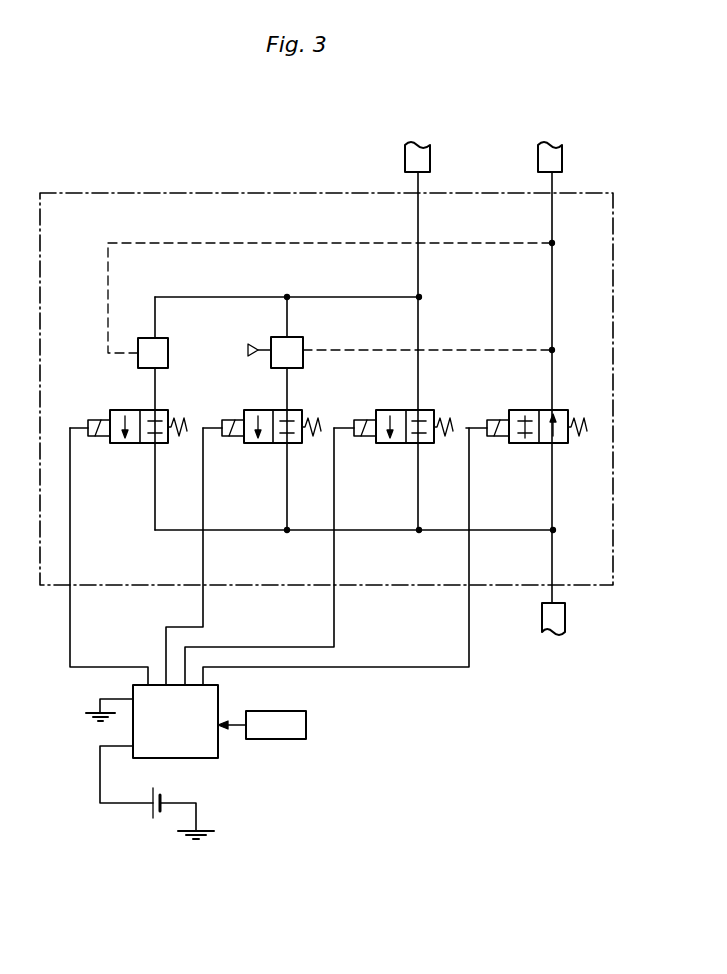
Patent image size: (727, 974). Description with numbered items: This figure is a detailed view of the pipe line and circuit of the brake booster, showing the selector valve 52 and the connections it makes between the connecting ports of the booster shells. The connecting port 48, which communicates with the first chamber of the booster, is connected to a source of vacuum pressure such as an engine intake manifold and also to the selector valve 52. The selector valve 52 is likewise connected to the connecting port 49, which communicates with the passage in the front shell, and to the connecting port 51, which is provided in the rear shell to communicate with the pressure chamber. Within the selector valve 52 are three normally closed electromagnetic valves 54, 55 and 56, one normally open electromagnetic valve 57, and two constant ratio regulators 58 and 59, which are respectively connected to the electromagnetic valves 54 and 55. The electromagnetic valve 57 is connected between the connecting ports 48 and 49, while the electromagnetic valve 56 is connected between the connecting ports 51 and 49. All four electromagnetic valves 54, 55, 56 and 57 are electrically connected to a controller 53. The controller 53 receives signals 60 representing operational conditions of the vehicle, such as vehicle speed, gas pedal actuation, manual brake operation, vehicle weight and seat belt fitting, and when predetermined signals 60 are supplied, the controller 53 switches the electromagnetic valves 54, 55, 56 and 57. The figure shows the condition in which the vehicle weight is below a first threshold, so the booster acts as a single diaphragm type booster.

The connecting port 48 is at (562, 155).
The connecting port 49 is at (565, 620).
The connecting port 51 is at (430, 155).
The selector valve 52 is at (613, 302).
The controller 53 is at (200, 758).
The normally closed electromagnetic valve 54 is at (165, 410).
The normally closed electromagnetic valve 55 is at (300, 410).
The normally closed electromagnetic valve 56 is at (432, 410).
The normally open electromagnetic valve 57 is at (566, 410).
The constant ratio regulator 58 is at (168, 352).
The constant ratio regulator 59 is at (303, 352).
The signals 60 is at (290, 739).